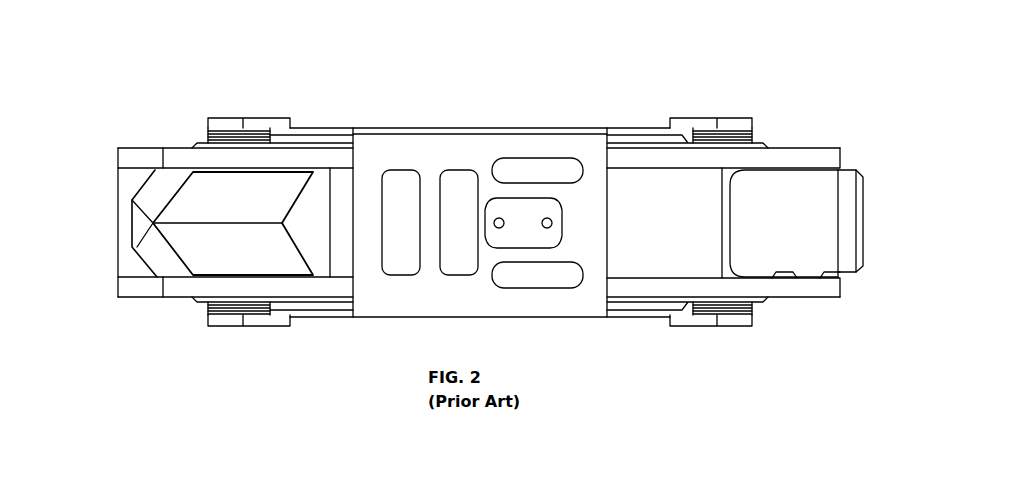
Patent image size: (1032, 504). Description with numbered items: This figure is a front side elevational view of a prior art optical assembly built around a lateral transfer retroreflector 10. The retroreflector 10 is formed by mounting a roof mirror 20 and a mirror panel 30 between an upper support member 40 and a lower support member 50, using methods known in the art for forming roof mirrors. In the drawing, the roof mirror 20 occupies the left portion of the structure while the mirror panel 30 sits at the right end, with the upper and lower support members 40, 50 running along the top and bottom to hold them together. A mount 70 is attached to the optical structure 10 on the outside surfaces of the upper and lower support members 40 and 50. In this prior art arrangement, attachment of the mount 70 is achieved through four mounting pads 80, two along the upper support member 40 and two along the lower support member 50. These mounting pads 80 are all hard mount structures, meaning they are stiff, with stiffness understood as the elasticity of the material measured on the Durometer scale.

The lateral transfer retroreflector 10 is at (792, 146).
The roof mirror 20 is at (158, 244).
The mirror panel 30 is at (806, 233).
The upper support member 40 is at (837, 162).
The lower support member 50 is at (833, 288).
The mount 70 is at (581, 296).
The mounting pad 80 is at (212, 146).